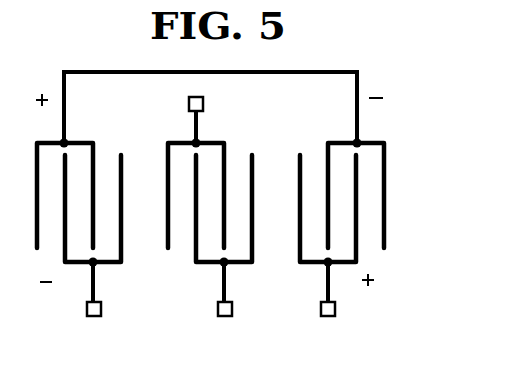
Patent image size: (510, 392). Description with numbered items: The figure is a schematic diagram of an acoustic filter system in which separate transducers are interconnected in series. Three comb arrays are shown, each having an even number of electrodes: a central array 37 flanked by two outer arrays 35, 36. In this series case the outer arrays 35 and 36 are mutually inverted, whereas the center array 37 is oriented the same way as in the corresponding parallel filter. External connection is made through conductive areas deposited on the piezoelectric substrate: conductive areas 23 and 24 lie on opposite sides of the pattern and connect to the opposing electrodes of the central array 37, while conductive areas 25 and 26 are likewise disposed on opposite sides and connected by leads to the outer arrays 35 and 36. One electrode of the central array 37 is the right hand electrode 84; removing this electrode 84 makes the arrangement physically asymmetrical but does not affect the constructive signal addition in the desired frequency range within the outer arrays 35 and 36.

The conductive area 23 is at (196, 97).
The conductive area 24 is at (224, 316).
The conductive area 25 is at (93, 316).
The conductive area 26 is at (328, 316).
The outer array 35 is at (88, 128).
The outer array 36 is at (397, 127).
The central array 37 is at (234, 198).
The right hand electrode 84 is at (253, 238).